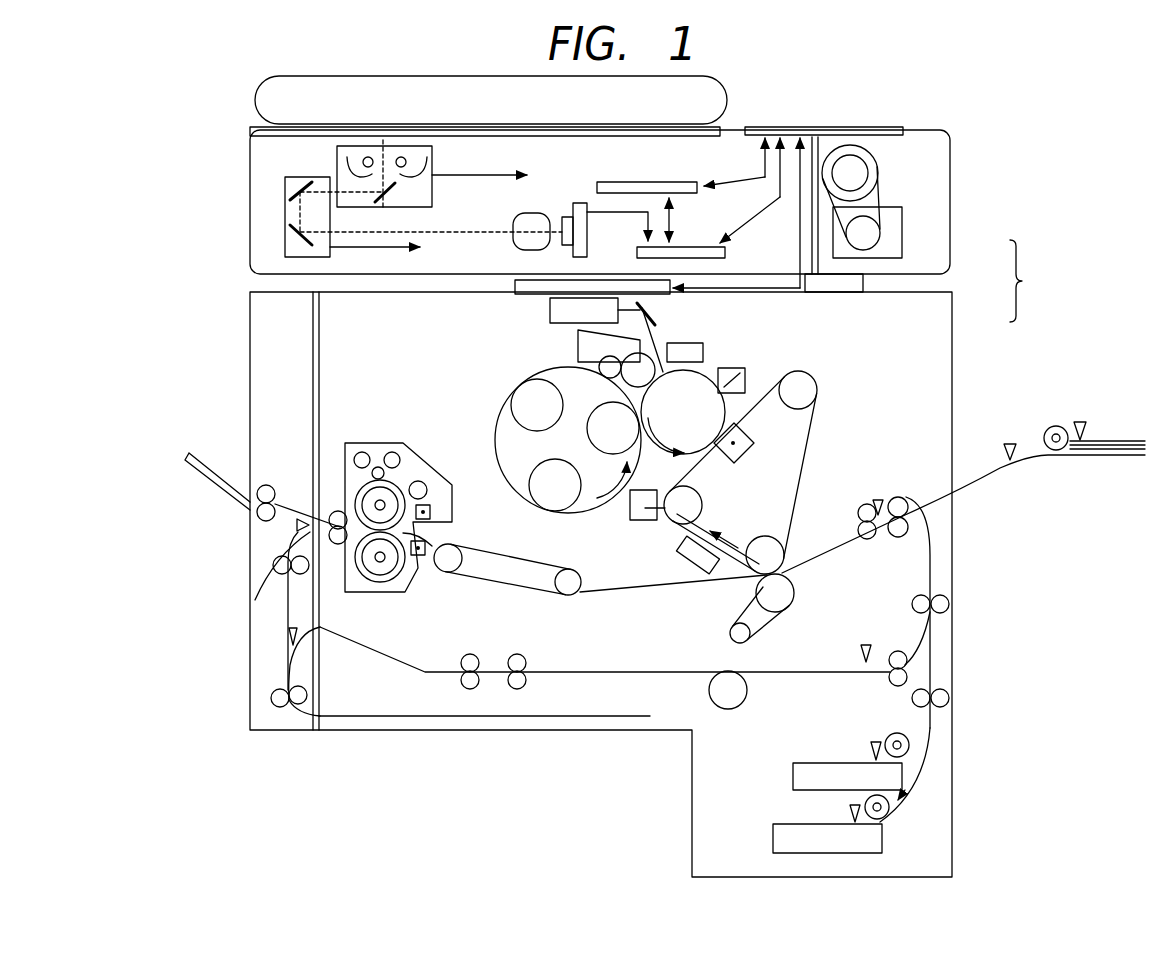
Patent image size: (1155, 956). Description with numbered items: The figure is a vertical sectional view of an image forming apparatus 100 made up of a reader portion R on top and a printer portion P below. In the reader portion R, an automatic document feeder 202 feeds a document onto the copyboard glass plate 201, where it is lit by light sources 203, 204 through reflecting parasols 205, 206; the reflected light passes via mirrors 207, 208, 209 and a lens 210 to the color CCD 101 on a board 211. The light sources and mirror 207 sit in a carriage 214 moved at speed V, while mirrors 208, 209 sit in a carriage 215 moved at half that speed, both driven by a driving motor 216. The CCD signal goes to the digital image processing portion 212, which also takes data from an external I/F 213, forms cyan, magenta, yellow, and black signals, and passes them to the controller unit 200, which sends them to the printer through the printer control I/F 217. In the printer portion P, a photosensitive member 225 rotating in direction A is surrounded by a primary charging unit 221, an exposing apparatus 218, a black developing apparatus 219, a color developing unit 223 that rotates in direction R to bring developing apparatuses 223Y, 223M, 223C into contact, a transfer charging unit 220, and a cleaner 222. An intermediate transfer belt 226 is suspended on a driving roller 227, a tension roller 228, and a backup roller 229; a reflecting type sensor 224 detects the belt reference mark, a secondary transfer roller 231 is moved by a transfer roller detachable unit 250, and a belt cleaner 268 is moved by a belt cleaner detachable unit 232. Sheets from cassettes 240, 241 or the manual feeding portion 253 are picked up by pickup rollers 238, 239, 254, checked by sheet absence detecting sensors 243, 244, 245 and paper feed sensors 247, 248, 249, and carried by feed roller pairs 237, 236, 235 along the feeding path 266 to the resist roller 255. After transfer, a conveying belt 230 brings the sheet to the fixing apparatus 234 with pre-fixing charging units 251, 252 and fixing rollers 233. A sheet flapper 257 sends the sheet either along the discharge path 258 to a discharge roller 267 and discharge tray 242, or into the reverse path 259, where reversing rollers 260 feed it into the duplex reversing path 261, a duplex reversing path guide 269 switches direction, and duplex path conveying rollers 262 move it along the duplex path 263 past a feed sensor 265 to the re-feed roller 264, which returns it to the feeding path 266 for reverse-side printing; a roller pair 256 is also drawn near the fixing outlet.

The image forming apparatus 100 is at (1035, 281).
The reader portion R is at (952, 252).
The printer portion P is at (952, 305).
The color CCD 101 is at (562, 217).
The controller unit 200 is at (843, 127).
The copyboard glass plate 201 is at (250, 132).
The automatic document feeder 202 is at (255, 96).
The light source 203 is at (401, 157).
The light source 204 is at (366, 157).
The reflecting parasol 205 is at (428, 160).
The reflecting parasol 206 is at (337, 160).
The mirror 207 is at (400, 198).
The mirror 208 is at (292, 196).
The mirror 209 is at (292, 238).
The lens 210 is at (514, 242).
The board 211 is at (580, 203).
The digital image processing portion 212 is at (700, 247).
The external I/F 213 is at (647, 182).
The carriage 214 is at (432, 190).
The carriage 215 is at (285, 215).
The driving motor 216 is at (878, 178).
The printer control I/F 217 is at (515, 288).
The exposing apparatus 218 is at (550, 312).
The black developing apparatus 219 is at (578, 345).
The transfer charging unit 220 is at (805, 447).
The primary charging unit 221 is at (685, 343).
The cleaner 222 is at (748, 373).
The color developing unit 223 is at (496, 438).
The developing apparatus 223Y is at (514, 398).
The developing apparatus 223C is at (588, 440).
The developing apparatus 223M is at (546, 508).
The reflecting type sensor 224 is at (690, 575).
The photosensitive member 225 is at (735, 368).
The intermediate transfer belt 226 is at (813, 405).
The roller 227 is at (702, 500).
The roller 228 is at (815, 382).
The roller 229 is at (761, 538).
The conveying belt 230 is at (480, 582).
The secondary transfer roller 231 is at (788, 610).
The belt cleaner detachable unit 232 is at (578, 595).
The fixing rollers 233 is at (386, 592).
The fixing apparatus 234 is at (362, 452).
The feed roller pair 235 is at (912, 527).
The feed roller pair 236 is at (948, 610).
The feed roller pair 237 is at (948, 696).
The pickup roller 238 is at (908, 748).
The pickup roller 239 is at (890, 812).
The cassette 240 is at (793, 770).
The cassette 241 is at (773, 835).
The discharge tray 242 is at (218, 470).
The sheet absence detecting sensor 243 is at (871, 748).
The sheet absence detecting sensor 244 is at (850, 810).
The sheet absence detecting sensor 245 is at (1082, 424).
The paper feed sensor 247 is at (927, 727).
The paper feed sensor 248 is at (906, 792).
The paper feed sensor 249 is at (1010, 444).
The transfer roller detachable unit 250 is at (730, 636).
The pre-fixing charging unit 251 is at (422, 481).
The pre-fixing charging unit 252 is at (432, 508).
The manual feeding portion 253 is at (1100, 456).
The pickup roller 254 is at (1054, 426).
The resist roller 255 is at (746, 232).
The fixing rollers 256 is at (878, 500).
The sheet flapper 257 is at (290, 532).
The discharge path 258 is at (300, 508).
The reverse path 259 is at (275, 567).
The reversing rollers 260 is at (255, 600).
The duplex reversing path 261 is at (383, 714).
The duplex path conveying rollers 262 is at (518, 655).
The duplex path 263 is at (607, 674).
The re-feed roller 264 is at (889, 674).
The feed sensor 265 is at (866, 645).
The feeding path 266 is at (930, 565).
The discharge roller 267 is at (258, 522).
The belt cleaner 268 is at (628, 512).
The duplex reversing path guide 269 is at (290, 634).